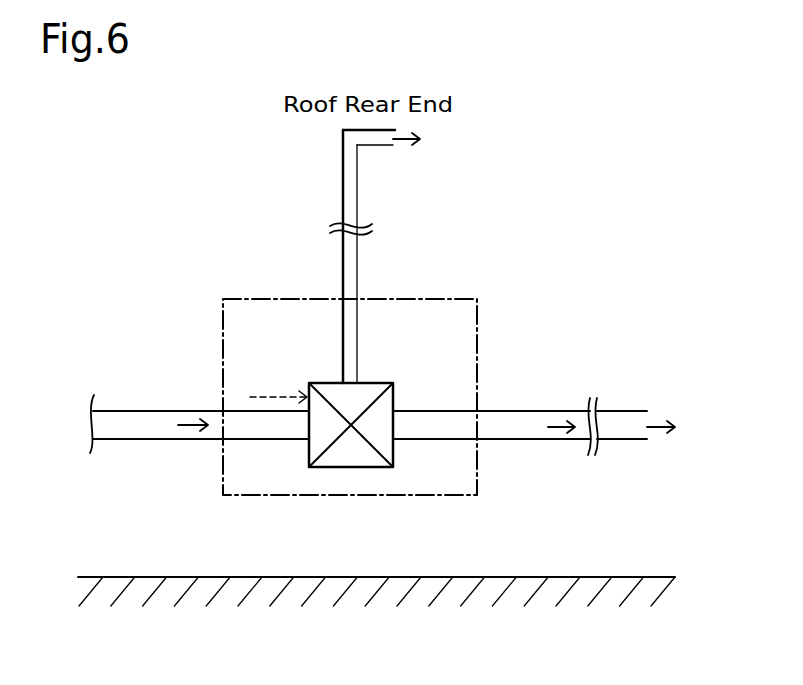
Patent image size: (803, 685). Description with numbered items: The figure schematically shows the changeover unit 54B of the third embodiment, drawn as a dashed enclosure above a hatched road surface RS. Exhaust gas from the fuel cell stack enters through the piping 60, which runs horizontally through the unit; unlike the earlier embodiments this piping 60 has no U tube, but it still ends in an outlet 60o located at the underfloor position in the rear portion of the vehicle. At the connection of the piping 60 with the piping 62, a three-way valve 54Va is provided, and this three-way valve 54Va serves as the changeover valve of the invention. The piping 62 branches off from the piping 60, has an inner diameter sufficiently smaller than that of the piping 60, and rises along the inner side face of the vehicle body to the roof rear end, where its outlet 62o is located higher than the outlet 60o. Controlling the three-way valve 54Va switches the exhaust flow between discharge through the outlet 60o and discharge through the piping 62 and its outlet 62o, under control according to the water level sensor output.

The changeover unit 54B is at (222, 353).
The three-way valve 54Va is at (380, 383).
The piping 60 is at (123, 440).
The outlet 60o is at (636, 412).
The piping 62 is at (358, 268).
The outlet 62o is at (393, 147).
The road surface RS is at (393, 577).